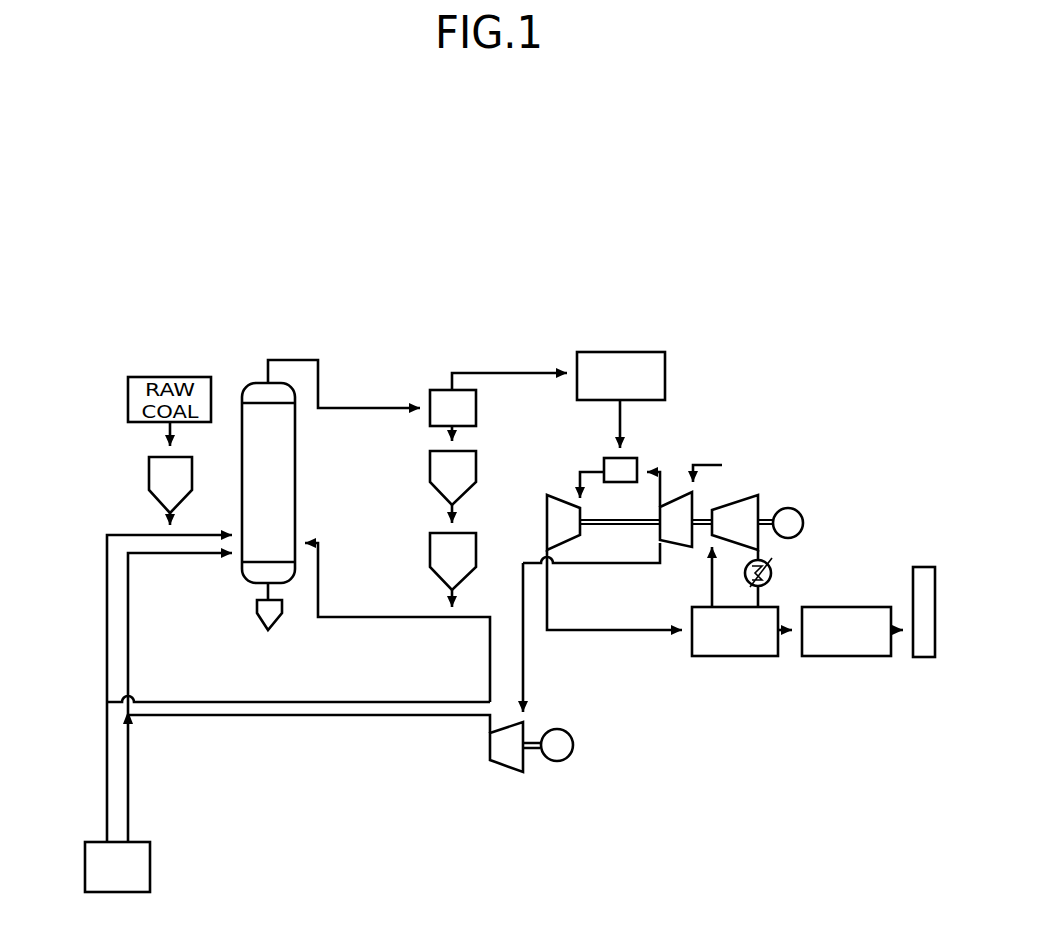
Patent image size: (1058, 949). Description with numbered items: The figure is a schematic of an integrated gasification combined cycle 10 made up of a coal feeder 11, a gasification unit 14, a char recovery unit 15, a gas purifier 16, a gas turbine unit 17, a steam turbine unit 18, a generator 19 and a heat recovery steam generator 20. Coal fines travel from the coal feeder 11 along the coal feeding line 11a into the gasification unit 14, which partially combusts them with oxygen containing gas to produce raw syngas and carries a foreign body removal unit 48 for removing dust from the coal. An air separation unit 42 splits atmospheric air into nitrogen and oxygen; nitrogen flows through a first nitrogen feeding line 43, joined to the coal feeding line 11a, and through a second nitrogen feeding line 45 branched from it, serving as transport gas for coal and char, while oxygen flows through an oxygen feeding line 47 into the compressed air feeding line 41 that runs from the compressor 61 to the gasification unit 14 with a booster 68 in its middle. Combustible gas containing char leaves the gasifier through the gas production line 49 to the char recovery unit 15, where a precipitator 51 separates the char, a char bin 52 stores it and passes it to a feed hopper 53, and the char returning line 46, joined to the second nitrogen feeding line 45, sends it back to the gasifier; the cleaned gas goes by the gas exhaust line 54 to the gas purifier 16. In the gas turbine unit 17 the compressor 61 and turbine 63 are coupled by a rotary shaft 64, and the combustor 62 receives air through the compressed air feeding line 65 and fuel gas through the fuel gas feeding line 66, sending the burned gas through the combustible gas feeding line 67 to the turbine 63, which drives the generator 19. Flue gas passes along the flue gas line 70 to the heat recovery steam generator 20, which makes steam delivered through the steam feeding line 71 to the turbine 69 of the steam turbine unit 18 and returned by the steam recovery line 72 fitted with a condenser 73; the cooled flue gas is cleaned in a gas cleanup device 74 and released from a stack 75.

The integrated gasification combined cycle 10 is at (427, 195).
The coal feeder 11 is at (138, 480).
The coal feeding line 11a is at (170, 513).
The gasification unit 14 is at (237, 380).
The char recovery unit 15 is at (440, 384).
The gas purifier 16 is at (639, 342).
The gas turbine unit 17 is at (567, 468).
The steam turbine unit 18 is at (745, 450).
The generator 19 is at (806, 510).
The heat recovery steam generator 20 is at (764, 667).
The compressed air feeding line 41 is at (324, 717).
The air separation unit 42 is at (83, 856).
The first nitrogen feeding line 43 is at (107, 752).
The second nitrogen feeding line 45 is at (163, 701).
The char returning line 46 is at (458, 593).
The oxygen feeding line 47 is at (130, 750).
The foreign body removal unit 48 is at (267, 628).
The gas production line 49 is at (299, 360).
The precipitator 51 is at (420, 400).
The char bin 52 is at (428, 458).
The feed hopper 53 is at (428, 540).
The gas exhaust line 54 is at (501, 373).
The compressor 61 is at (677, 548).
The combustor 62 is at (636, 460).
The turbine 63 is at (547, 500).
The rotary shaft 64 is at (612, 527).
The compressed air feeding line 65 is at (664, 482).
The fuel gas feeding line 66 is at (625, 405).
The combustible gas feeding line 67 is at (581, 471).
The booster 68 is at (500, 770).
The turbine 69 is at (749, 498).
The flue gas line 70 is at (618, 633).
The steam feeding line 71 is at (707, 590).
The steam recovery line 72 is at (768, 599).
The condenser 73 is at (774, 567).
The gas cleanup device 74 is at (857, 607).
The stack 75 is at (925, 567).